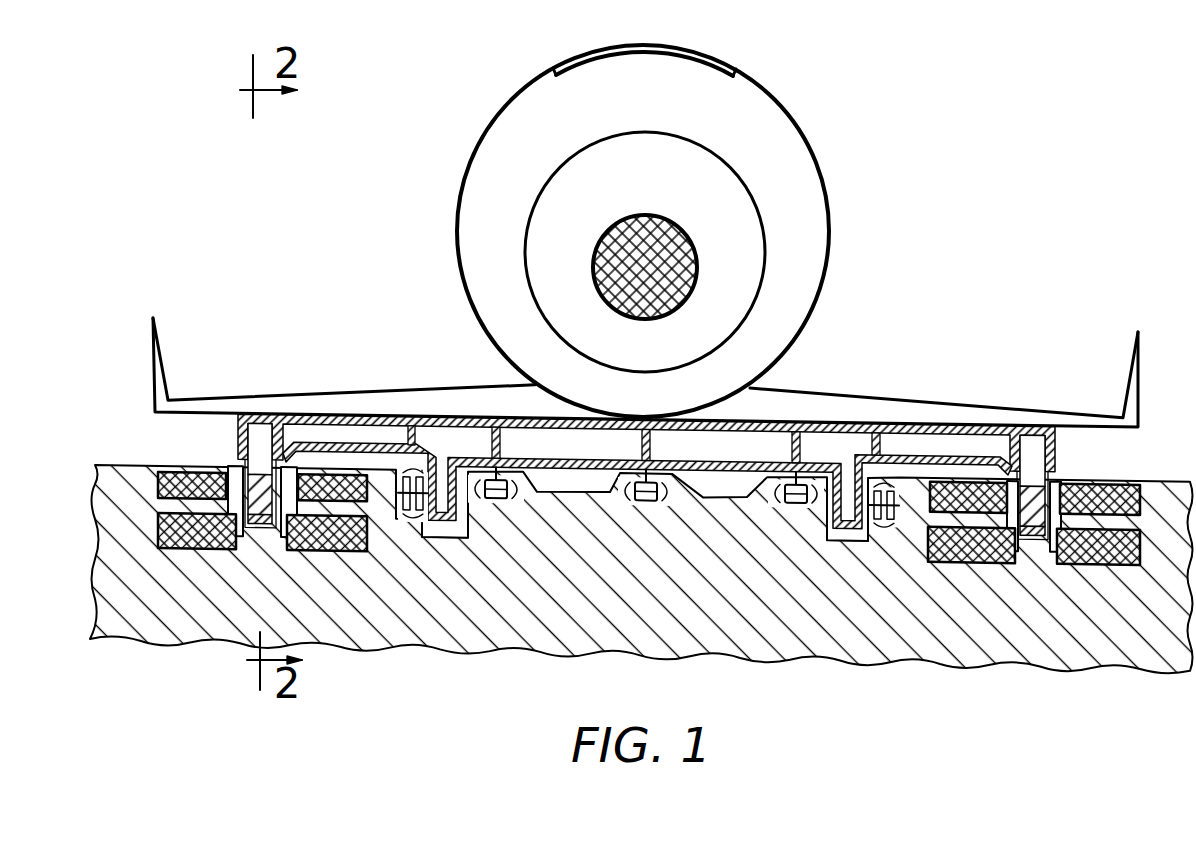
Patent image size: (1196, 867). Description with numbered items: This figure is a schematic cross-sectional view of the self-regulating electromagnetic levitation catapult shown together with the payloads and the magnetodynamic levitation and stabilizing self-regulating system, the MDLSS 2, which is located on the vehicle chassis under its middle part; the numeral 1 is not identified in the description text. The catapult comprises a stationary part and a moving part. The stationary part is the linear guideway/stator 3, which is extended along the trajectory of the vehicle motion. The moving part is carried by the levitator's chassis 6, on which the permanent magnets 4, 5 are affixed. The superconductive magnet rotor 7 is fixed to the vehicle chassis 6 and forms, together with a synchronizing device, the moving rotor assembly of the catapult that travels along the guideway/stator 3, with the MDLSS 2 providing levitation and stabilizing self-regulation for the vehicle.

The wheel 1 is at (795, 188).
The MDLSS 2 is at (897, 543).
The guideway/stator 3 is at (383, 558).
The permanent magnet 4 is at (400, 533).
The permanent magnet 5 is at (793, 510).
The levitator's chassis 6 is at (828, 420).
The superconductive magnet rotor 7 is at (259, 413).